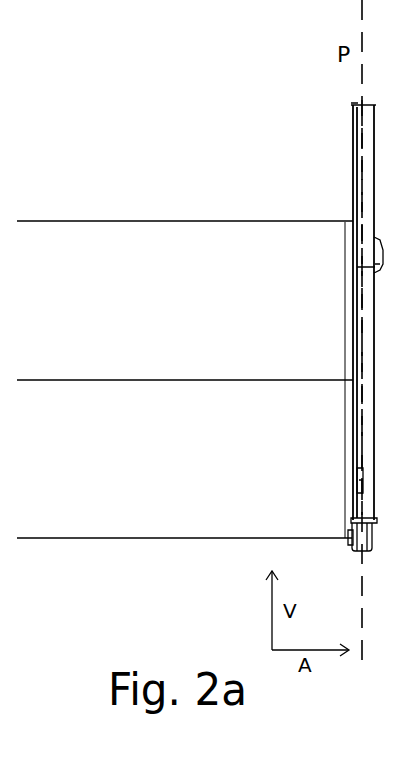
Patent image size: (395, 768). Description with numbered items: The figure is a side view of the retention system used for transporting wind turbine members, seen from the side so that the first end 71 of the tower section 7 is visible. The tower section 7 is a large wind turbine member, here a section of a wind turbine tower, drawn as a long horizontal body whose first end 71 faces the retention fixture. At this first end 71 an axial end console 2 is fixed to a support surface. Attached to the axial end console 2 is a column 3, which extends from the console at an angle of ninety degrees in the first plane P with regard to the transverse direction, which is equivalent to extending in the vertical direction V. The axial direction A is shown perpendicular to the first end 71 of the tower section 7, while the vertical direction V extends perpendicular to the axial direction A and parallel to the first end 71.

The axial end console 2 is at (366, 552).
The column 3 is at (358, 193).
The tower section 7 is at (178, 225).
The first end 71 is at (357, 292).